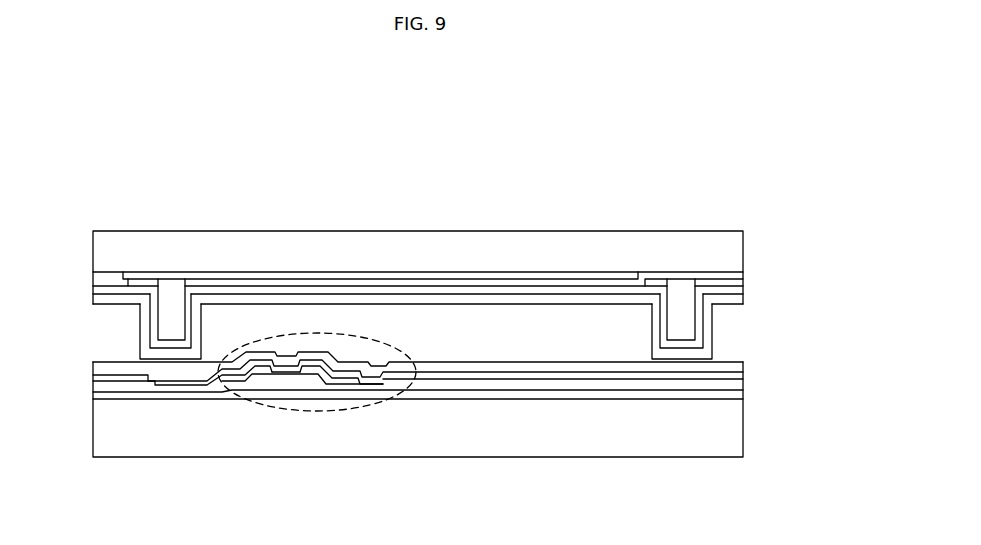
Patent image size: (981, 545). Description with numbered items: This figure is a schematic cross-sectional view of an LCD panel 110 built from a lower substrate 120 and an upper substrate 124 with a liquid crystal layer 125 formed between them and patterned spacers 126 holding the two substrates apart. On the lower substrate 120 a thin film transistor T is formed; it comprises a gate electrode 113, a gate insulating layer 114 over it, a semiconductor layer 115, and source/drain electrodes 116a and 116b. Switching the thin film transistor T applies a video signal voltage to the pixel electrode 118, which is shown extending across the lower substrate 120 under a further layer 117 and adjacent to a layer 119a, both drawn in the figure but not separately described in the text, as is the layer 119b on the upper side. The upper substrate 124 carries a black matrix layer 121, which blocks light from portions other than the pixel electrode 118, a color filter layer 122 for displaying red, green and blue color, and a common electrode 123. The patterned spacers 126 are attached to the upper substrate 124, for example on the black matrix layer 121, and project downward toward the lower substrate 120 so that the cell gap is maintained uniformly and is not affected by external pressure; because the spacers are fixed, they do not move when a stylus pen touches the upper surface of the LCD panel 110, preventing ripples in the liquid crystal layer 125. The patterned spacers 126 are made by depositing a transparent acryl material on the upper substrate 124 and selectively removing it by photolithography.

The LCD panel 110 is at (681, 210).
The gate electrode 113 is at (289, 392).
The gate insulating layer 114 is at (104, 389).
The semiconductor layer 115 is at (265, 384).
The source electrode 116a is at (208, 385).
The drain electrode 116b is at (366, 395).
The pixel electrode 117 is at (580, 381).
The pixel electrode 118 is at (745, 374).
The lower alignment layer 119a is at (632, 361).
The upper alignment layer 119b is at (512, 302).
The lower substrate 120 is at (744, 434).
The black matrix layer 121 is at (146, 279).
The color filter layer 122 is at (578, 279).
The common electrode 123 is at (333, 286).
The upper substrate 124 is at (745, 249).
The liquid crystal layer 125 is at (437, 325).
The patterned spacers 126 is at (692, 320).
The thin film transistor T is at (323, 412).